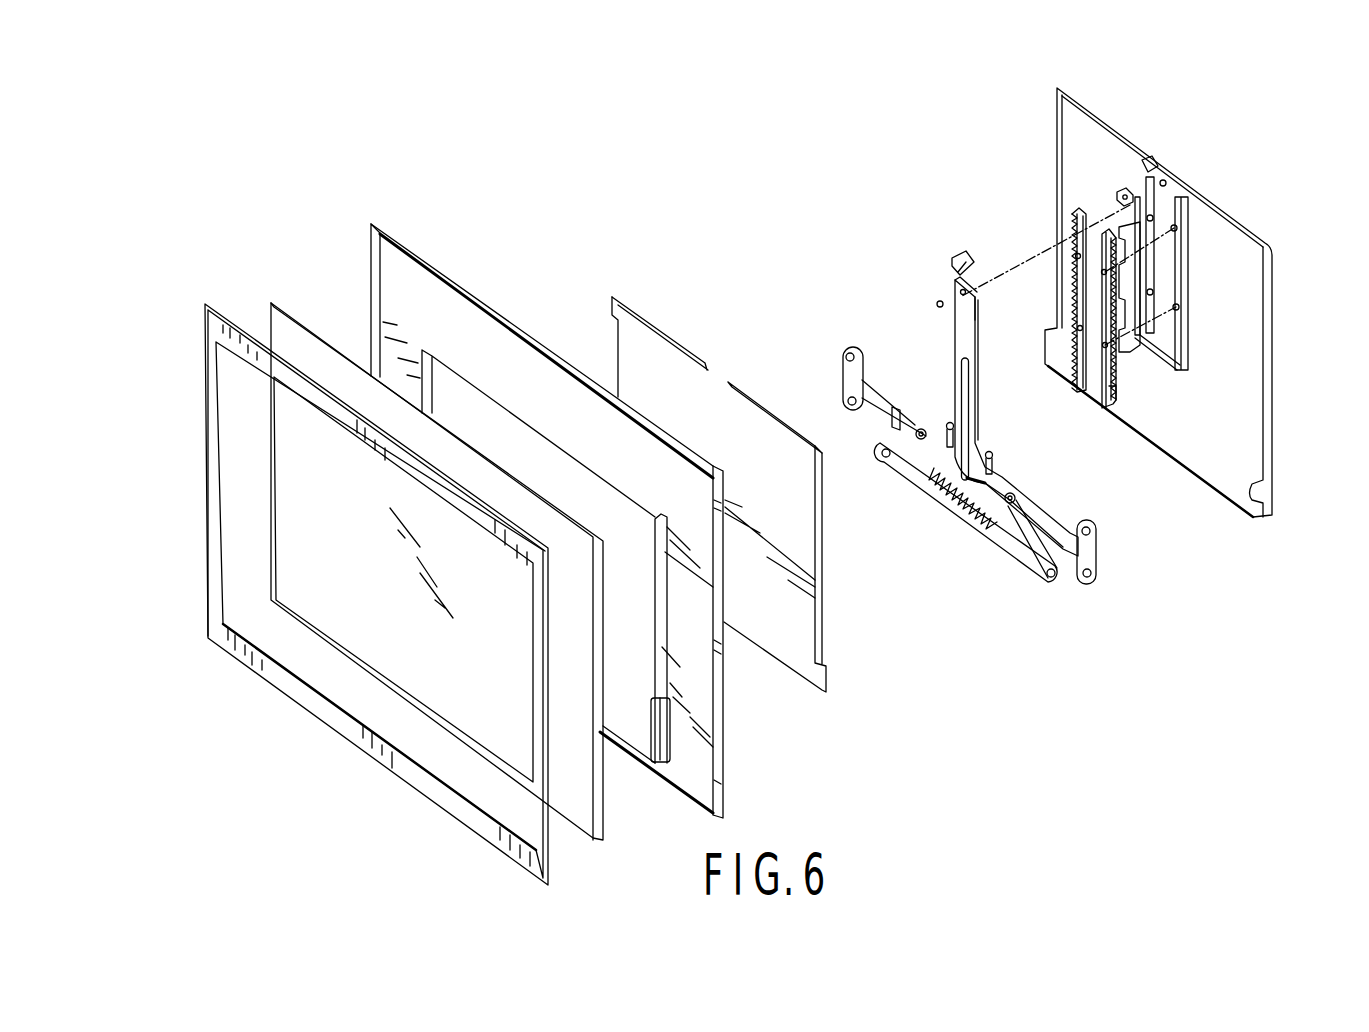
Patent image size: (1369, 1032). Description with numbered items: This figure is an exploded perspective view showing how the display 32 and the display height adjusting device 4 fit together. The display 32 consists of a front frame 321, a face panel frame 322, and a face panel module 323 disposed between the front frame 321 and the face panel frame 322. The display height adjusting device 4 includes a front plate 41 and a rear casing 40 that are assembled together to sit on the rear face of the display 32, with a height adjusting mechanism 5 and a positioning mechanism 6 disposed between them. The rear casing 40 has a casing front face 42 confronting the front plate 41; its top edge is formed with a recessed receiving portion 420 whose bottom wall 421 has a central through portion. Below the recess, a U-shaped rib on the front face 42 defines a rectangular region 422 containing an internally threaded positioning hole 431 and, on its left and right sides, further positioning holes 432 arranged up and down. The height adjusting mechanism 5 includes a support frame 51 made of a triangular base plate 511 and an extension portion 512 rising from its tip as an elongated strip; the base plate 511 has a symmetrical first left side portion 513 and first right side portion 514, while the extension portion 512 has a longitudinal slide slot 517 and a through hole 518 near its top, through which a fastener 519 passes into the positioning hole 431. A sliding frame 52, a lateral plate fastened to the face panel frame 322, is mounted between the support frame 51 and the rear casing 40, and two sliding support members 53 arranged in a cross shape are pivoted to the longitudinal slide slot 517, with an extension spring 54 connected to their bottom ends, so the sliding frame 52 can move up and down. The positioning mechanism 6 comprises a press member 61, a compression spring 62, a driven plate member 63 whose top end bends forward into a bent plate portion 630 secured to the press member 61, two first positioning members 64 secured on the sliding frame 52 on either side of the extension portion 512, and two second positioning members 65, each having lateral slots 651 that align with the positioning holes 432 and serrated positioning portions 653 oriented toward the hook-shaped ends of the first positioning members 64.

The display 32 is at (505, 238).
The front frame 321 is at (227, 330).
The face panel frame 322 is at (395, 237).
The face panel module 323 is at (283, 308).
The display height adjusting device 4 is at (836, 240).
The front plate 41 is at (632, 312).
The rear casing 40 is at (1270, 333).
The casing front face 42 is at (1237, 375).
The recessed receiving portion 420 is at (1164, 169).
The bottom wall 421 is at (1153, 165).
The internally threaded positioning hole 431 is at (1165, 182).
The internally threaded positioning holes 432 is at (1175, 226).
The rectangular region 422 is at (1168, 275).
The height adjusting mechanism 5 is at (1073, 602).
The support frame 51 is at (917, 478).
The triangular base plate 511 is at (960, 512).
The extension portion 512 is at (953, 290).
The first left side portion 513 is at (912, 434).
The first right side portion 514 is at (1010, 518).
The longitudinal slide slot 517 is at (965, 375).
The through hole 518 is at (979, 301).
The fastener 519 is at (937, 305).
The sliding frame 52 is at (1092, 540).
The sliding support members 53 is at (892, 455).
The extension spring 54 is at (938, 490).
The positioning mechanism 6 is at (1079, 184).
The press member 61 is at (946, 246).
The compression spring 62 is at (950, 262).
The driven plate member 63 is at (1120, 188).
The bent plate portion 630 is at (1122, 196).
The first positioning members 64 is at (950, 422).
The second positioning members 65 is at (1083, 395).
The lateral slots 651 is at (1112, 342).
The positioning portions 653 is at (1111, 390).